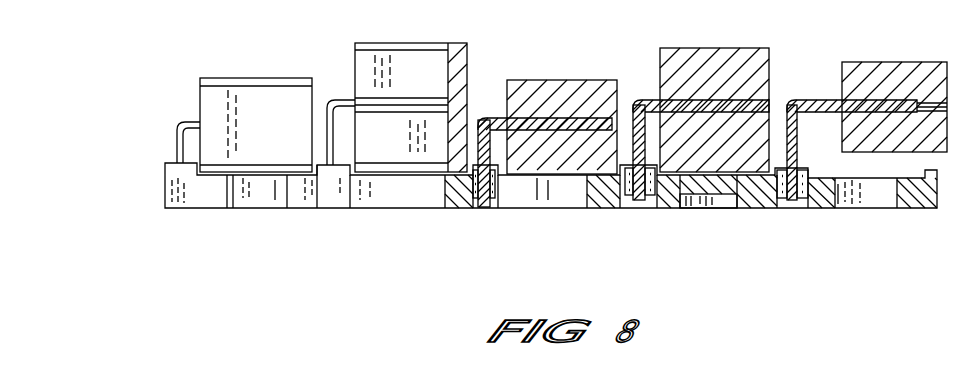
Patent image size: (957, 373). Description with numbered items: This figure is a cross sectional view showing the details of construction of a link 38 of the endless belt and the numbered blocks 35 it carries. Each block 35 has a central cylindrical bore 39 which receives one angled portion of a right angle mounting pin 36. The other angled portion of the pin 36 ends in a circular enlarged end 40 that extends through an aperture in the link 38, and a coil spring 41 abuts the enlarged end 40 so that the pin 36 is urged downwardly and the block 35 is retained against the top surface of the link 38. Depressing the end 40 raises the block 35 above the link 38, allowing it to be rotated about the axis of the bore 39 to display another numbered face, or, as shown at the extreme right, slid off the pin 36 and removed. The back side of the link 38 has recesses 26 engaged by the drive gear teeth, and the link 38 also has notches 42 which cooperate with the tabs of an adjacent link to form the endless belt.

The recess 26 is at (723, 203).
The numbered block 35 is at (296, 86).
The right angle mounting pin 36 is at (176, 130).
The link 38 is at (163, 200).
The central cylindrical bore 39 is at (624, 118).
The circular enlarged end 40 is at (480, 208).
The coil spring 41 is at (505, 208).
The notch 42 is at (275, 190).